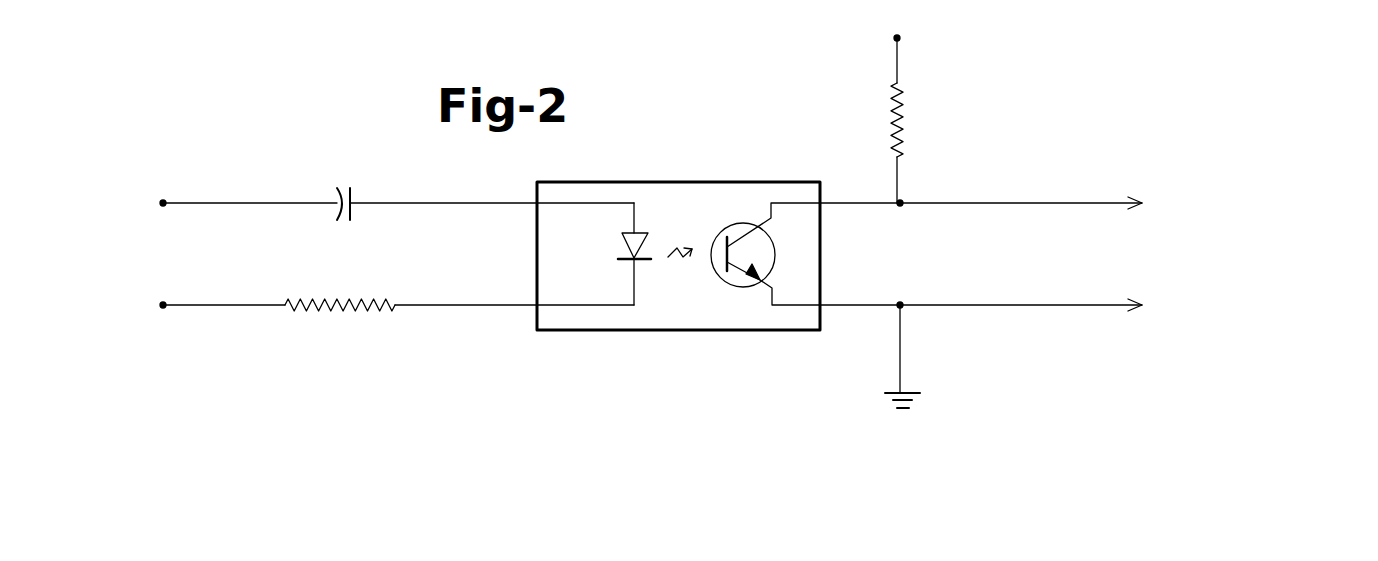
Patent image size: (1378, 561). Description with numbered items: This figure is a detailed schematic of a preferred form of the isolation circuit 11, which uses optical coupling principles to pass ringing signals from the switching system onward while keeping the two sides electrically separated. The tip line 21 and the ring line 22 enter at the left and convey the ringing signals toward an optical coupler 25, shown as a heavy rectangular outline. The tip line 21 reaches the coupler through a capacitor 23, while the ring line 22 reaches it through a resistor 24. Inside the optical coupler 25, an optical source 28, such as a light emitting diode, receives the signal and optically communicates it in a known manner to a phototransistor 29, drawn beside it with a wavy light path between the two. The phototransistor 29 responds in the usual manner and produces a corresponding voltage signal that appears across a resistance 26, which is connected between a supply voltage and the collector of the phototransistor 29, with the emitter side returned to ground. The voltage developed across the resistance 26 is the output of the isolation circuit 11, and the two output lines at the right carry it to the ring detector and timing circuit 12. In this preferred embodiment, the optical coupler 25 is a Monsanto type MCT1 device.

The isolation circuit 11 is at (380, 219).
The ring detector and timing circuit 12 is at (1091, 254).
The tip line 21 is at (140, 200).
The ring line 22 is at (140, 302).
The capacitor 23 is at (356, 190).
The resistor 24 is at (340, 319).
The optical coupler 25 is at (686, 182).
The resistance 26 is at (915, 109).
The optical source 28 is at (642, 262).
The phototransistor 29 is at (720, 232).